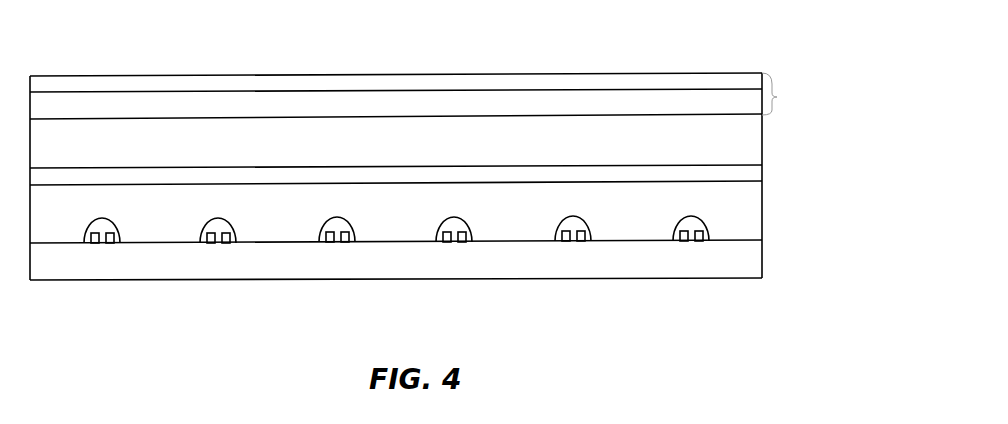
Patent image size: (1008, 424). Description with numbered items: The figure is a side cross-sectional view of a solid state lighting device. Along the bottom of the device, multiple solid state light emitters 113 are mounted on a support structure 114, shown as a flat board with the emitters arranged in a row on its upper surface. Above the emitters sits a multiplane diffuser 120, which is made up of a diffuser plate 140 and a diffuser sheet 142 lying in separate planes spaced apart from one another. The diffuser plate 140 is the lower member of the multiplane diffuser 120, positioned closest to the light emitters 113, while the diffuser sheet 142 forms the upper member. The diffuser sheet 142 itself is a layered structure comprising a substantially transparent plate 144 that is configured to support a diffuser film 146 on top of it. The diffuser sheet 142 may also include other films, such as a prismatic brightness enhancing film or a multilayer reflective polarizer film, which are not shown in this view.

The solid state light emitters 113 is at (467, 228).
The support structure 114 is at (736, 261).
The multiplane diffuser 120 is at (762, 146).
The diffuser plate 140 is at (750, 173).
The diffuser sheet 142 is at (776, 97).
The substantially transparent plate 144 is at (750, 108).
The diffuser film 146 is at (457, 82).